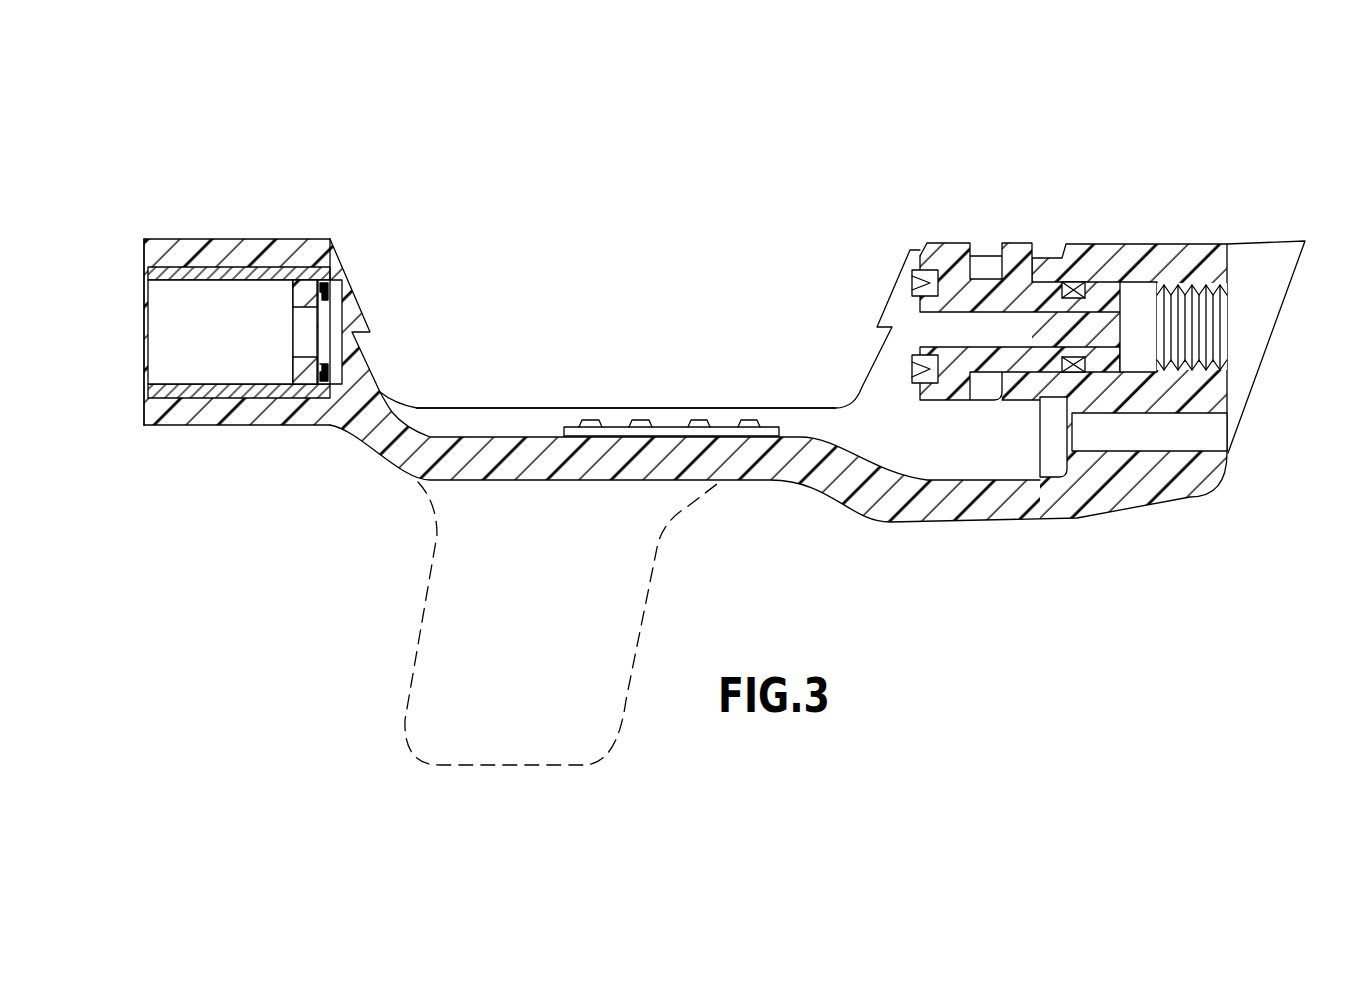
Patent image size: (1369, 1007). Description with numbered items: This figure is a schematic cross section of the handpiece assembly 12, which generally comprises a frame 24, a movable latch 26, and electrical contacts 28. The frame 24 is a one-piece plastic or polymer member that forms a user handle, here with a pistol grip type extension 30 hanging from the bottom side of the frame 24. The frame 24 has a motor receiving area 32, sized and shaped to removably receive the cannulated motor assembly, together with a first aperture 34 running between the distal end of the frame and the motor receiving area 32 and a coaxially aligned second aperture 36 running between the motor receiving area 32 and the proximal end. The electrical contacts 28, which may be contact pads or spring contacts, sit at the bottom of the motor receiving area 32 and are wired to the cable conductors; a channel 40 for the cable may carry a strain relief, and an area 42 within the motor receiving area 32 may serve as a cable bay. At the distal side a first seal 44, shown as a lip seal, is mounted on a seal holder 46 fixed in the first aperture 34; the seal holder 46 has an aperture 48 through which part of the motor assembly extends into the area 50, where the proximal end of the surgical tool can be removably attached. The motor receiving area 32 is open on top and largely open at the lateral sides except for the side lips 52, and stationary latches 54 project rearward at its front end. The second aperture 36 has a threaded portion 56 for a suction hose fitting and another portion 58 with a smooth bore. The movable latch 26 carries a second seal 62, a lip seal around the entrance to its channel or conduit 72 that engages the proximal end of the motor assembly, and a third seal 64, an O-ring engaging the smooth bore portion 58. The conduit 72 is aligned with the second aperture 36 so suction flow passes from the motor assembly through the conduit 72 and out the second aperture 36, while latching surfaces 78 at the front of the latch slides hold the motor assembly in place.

The handpiece assembly 12 is at (253, 135).
The frame 24 is at (268, 426).
The movable latch 26 is at (1079, 343).
The electrical contacts 28 is at (727, 432).
The pistol grip type extension 30 is at (438, 634).
The motor receiving area 32 is at (608, 262).
The first aperture 34 is at (205, 357).
The second aperture 36 is at (1138, 292).
The channel 40 is at (1178, 454).
The area 42 is at (965, 455).
The first seal 44 is at (337, 283).
The seal holder 46 is at (235, 268).
The aperture 48 is at (300, 325).
The area 50 is at (185, 300).
The side lips 52 is at (485, 408).
The stationary latches 54 is at (365, 318).
The threaded portion 56 is at (1217, 310).
The smooth bore portion 58 is at (1044, 400).
The second seal 62 is at (920, 278).
The third seal 64 is at (1077, 366).
The channel or conduit 72 is at (930, 327).
The latching surfaces 78 is at (887, 330).